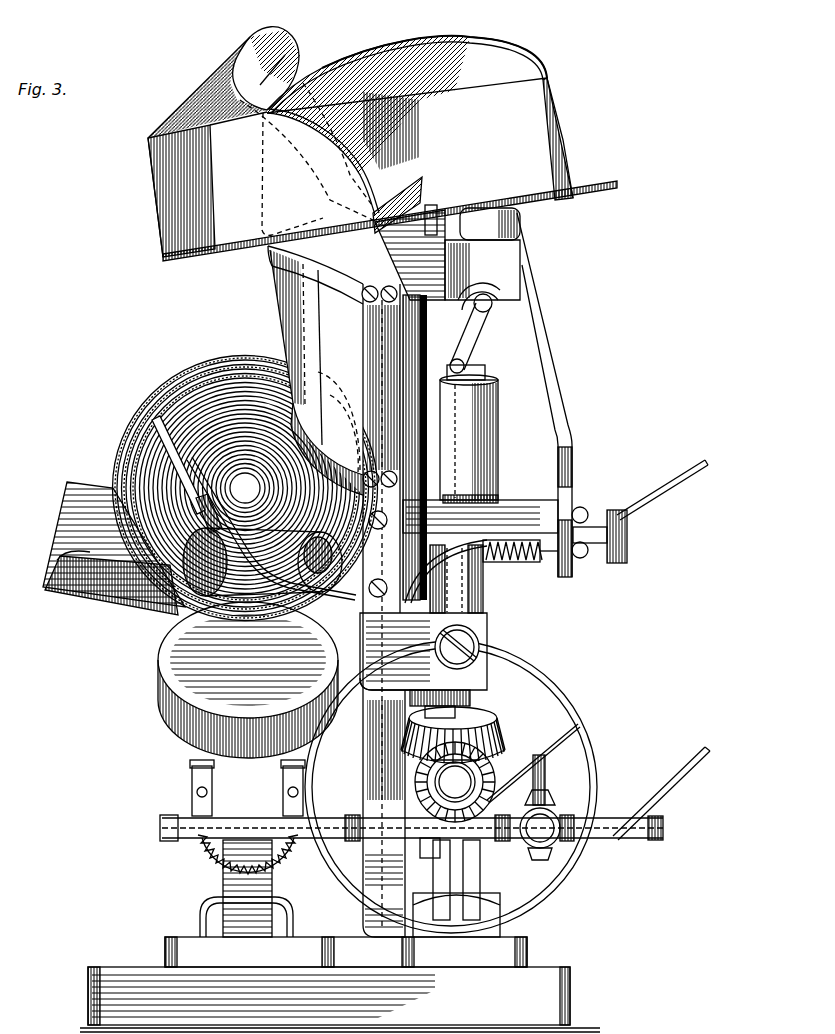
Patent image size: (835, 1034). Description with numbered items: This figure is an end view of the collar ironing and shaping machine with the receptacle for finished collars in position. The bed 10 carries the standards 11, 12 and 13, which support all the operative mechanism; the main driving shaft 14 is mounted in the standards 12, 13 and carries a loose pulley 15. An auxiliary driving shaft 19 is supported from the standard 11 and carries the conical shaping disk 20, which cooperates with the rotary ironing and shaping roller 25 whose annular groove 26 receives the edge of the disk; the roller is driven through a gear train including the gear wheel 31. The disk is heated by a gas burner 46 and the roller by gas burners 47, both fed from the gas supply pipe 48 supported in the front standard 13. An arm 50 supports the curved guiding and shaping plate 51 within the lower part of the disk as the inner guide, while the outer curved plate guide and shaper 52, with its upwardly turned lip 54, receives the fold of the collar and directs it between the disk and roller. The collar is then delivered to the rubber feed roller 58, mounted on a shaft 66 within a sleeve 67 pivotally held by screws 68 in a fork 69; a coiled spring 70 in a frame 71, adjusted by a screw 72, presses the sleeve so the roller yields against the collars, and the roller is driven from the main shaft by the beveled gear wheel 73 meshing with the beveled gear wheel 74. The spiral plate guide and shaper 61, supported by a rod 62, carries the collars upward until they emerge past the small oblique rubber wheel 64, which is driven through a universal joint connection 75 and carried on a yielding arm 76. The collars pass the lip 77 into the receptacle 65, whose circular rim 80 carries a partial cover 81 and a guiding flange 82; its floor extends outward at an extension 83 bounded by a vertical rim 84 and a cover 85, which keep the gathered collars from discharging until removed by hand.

The bed 10 is at (450, 1004).
The standard 11 is at (215, 900).
The standard 12 is at (480, 880).
The standard 13 is at (355, 860).
The main driving shaft 14 is at (420, 850).
The loose pulley 15 is at (575, 718).
The auxiliary driving shaft 19 is at (245, 488).
The conical shaping disk 20 is at (168, 380).
The ironing and shaping roller 25 is at (158, 660).
The annular groove 26 is at (160, 708).
The gear wheel 31 is at (200, 855).
The gas burner 46 is at (155, 423).
The gas burners 47 is at (190, 780).
The gas supply pipe 48 is at (160, 830).
The arm 50 is at (271, 528).
The curved guiding and shaping plate 51 is at (290, 540).
The curved plate guide and shaper 52 is at (109, 536).
The upwardly turned lip 54 is at (55, 558).
The feed roller 58 is at (484, 432).
The plate guide and shaper 61 is at (420, 410).
The rod 62 is at (365, 348).
The oblique rubber wheel 64 is at (522, 233).
The receptacle 65 is at (145, 197).
The shaft 66 is at (490, 718).
The sleeve 67 is at (483, 585).
The screws 68 is at (480, 640).
The fork 69 is at (480, 680).
The coiled spring 70 is at (560, 560).
The frame 71 is at (528, 520).
The screw 72 is at (630, 541).
The beveled gear wheel 73 is at (490, 800).
The beveled gear wheel 74 is at (490, 740).
The universal joint connection 75 is at (470, 345).
The arm 76 is at (545, 355).
The lip 77 is at (420, 240).
The circular rim 80 is at (420, 125).
The partial cover 81 is at (415, 45).
The guiding flange 82 is at (420, 180).
The floor extension 83 is at (605, 185).
The vertical rim 84 is at (260, 170).
The cover 85 is at (224, 82).